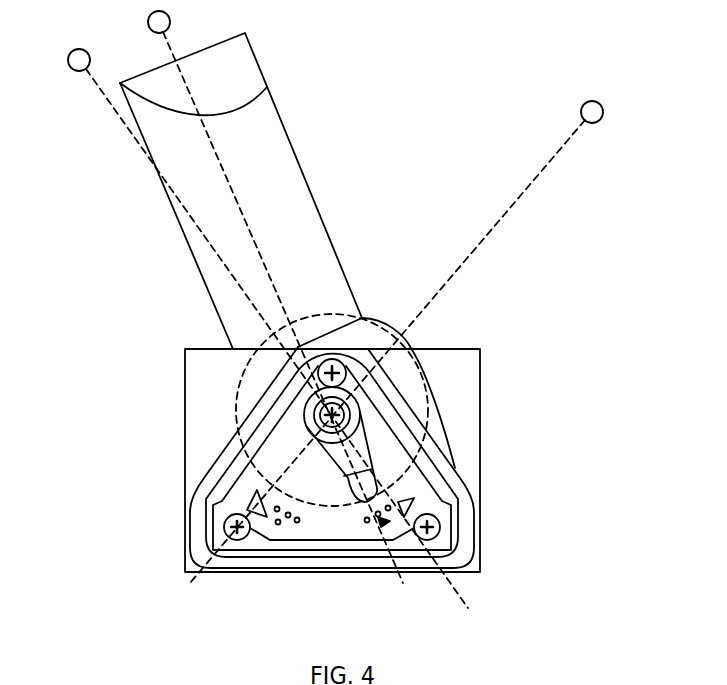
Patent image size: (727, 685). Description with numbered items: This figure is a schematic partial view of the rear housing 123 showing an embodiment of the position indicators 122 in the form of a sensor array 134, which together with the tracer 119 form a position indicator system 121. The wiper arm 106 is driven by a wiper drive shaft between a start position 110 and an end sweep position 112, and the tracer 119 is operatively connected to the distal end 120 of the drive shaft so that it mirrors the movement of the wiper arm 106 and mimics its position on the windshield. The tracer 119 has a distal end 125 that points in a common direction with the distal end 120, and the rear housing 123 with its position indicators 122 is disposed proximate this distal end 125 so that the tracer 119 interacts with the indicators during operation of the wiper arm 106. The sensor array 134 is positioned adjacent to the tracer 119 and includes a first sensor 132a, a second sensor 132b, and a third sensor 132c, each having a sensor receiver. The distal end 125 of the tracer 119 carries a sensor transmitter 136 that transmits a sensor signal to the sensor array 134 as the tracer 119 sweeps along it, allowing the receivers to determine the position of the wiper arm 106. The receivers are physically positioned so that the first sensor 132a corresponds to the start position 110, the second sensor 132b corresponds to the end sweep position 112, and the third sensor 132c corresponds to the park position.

The wiper arm 106 is at (300, 164).
The start position 110 is at (173, 50).
The end sweep position 112 is at (543, 163).
The tracer 119 is at (360, 430).
The distal end 120 is at (397, 300).
The position indicator system 121 is at (156, 520).
The position indicators 122 is at (270, 534).
The rear housing 123 is at (182, 349).
The distal end 125 is at (392, 492).
The first sensor 132a is at (381, 524).
The second sensor 132b is at (257, 508).
The third sensor 132c is at (415, 504).
The sensor array 134 is at (288, 528).
The sensor transmitter 136 is at (378, 471).